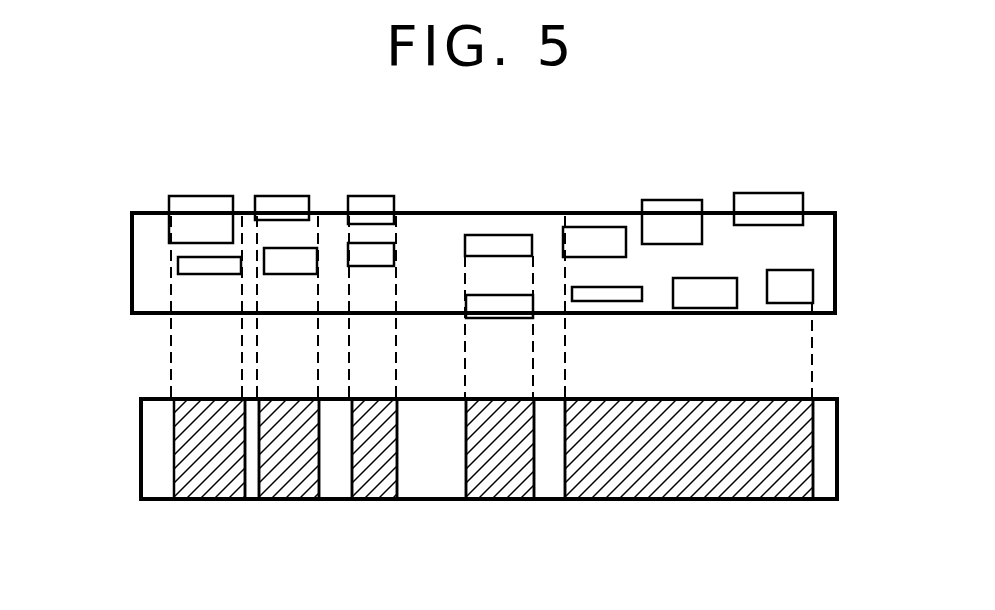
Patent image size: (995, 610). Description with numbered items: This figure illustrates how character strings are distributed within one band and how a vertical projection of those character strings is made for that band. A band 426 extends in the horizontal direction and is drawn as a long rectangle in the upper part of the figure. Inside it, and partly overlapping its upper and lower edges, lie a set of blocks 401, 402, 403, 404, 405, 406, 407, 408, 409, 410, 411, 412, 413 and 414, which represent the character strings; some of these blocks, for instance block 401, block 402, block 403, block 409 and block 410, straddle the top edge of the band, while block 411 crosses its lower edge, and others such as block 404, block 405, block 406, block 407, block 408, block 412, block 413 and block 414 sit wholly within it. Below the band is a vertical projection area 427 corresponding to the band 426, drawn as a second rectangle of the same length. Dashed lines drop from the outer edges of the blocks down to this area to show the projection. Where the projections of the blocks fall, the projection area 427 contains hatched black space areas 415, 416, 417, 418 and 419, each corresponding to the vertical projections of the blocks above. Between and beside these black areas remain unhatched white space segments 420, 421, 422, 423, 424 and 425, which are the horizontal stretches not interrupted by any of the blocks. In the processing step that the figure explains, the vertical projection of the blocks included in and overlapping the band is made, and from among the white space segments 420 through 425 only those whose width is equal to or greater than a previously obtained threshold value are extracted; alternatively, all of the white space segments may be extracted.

The block 401 is at (192, 196).
The block 402 is at (270, 196).
The block 403 is at (367, 196).
The block 404 is at (178, 272).
The block 405 is at (287, 274).
The block 406 is at (388, 254).
The block 407 is at (482, 235).
The block 408 is at (582, 235).
The block 409 is at (660, 223).
The block 410 is at (748, 207).
The block 411 is at (498, 303).
The block 412 is at (613, 293).
The block 413 is at (708, 298).
The block 414 is at (788, 295).
The black space area 415 is at (217, 485).
The black space area 416 is at (297, 485).
The black space area 417 is at (373, 485).
The black space area 418 is at (487, 488).
The black space area 419 is at (617, 477).
The white space segment 420 is at (158, 487).
The white space segment 421 is at (250, 487).
The white space segment 422 is at (337, 482).
The white space segment 423 is at (443, 482).
The white space segment 424 is at (553, 482).
The white space segment 425 is at (823, 482).
The band 426 is at (130, 232).
The vertical projection area 427 is at (141, 432).